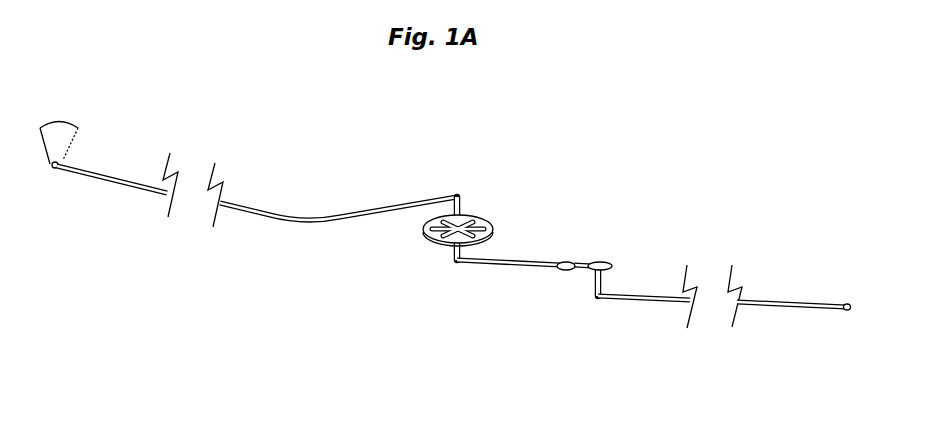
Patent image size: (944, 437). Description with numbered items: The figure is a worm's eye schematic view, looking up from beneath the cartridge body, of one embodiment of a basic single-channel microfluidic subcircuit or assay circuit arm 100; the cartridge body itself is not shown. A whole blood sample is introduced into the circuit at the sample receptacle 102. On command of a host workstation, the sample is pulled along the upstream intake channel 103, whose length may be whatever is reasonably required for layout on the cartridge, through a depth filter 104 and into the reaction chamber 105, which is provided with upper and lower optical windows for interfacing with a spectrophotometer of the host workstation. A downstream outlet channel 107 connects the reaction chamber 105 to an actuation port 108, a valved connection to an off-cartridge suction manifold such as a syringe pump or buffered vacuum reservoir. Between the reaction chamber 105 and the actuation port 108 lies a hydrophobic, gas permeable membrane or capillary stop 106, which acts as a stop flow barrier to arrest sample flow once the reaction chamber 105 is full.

The assay circuit arm 100 is at (315, 308).
The sample receptacle 102 is at (60, 118).
The upstream intake channel 103 is at (287, 213).
The depth filter 104 is at (498, 223).
The reaction chamber 105 is at (568, 252).
The capillary stop 106 is at (610, 263).
The downstream outlet channel 107 is at (762, 307).
The actuation port 108 is at (847, 300).